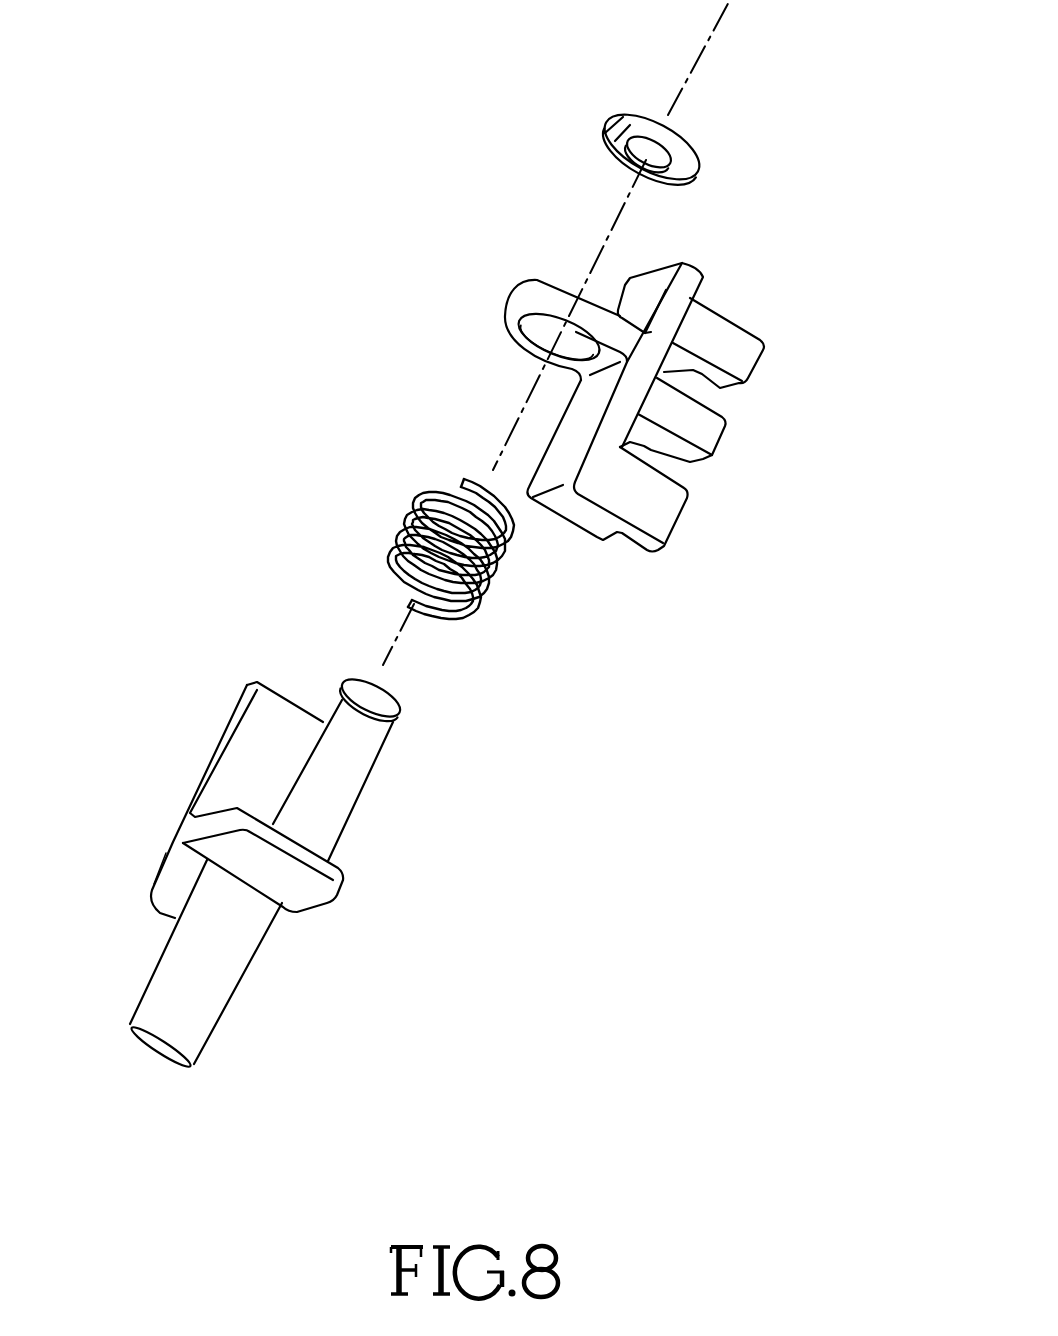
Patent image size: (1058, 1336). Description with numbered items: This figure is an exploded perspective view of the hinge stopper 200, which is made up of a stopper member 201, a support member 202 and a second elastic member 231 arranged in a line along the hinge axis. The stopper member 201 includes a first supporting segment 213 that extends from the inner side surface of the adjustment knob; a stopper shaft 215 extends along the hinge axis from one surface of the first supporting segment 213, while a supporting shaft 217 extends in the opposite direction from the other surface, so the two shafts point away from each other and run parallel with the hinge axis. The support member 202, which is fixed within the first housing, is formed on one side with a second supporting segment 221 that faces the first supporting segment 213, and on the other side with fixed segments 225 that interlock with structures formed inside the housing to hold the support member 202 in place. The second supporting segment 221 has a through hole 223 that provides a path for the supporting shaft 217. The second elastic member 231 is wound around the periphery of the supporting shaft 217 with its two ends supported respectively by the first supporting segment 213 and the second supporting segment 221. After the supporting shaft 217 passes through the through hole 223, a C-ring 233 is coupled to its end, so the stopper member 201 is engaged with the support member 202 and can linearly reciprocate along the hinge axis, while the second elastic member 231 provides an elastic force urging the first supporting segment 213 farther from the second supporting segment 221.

The hinge stopper 200 is at (95, 228).
The stopper member 201 is at (191, 753).
The support member 202 is at (751, 448).
The first supporting segment 213 is at (332, 877).
The stopper shaft 215 is at (218, 975).
The supporting shaft 217 is at (345, 778).
The second supporting segment 221 is at (525, 293).
The through hole 223 is at (517, 336).
The fixed segments 225 is at (742, 355).
The second elastic member 231 is at (385, 502).
The C-ring 233 is at (599, 129).